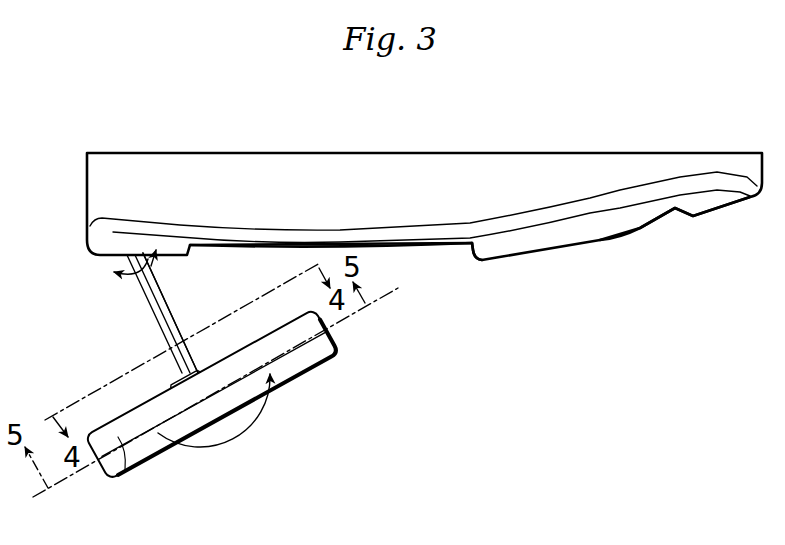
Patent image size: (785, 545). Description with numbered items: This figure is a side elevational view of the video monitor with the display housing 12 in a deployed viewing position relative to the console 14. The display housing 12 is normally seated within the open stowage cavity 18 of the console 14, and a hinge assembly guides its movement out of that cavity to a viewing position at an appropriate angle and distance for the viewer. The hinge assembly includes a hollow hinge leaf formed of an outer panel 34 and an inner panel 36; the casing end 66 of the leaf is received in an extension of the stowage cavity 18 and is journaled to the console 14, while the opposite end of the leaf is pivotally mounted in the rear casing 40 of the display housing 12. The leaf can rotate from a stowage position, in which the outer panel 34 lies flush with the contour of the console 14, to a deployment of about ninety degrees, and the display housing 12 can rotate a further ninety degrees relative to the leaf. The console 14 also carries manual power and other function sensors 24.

The display housing 12 is at (350, 343).
The console 14 is at (278, 200).
The stowage cavity 18 is at (450, 245).
The manual power and other function sensors 24 is at (645, 228).
The outer panel 34 is at (137, 293).
The inner panel 36 is at (172, 317).
The rear casing 40 is at (125, 483).
The casing end 66 is at (100, 255).